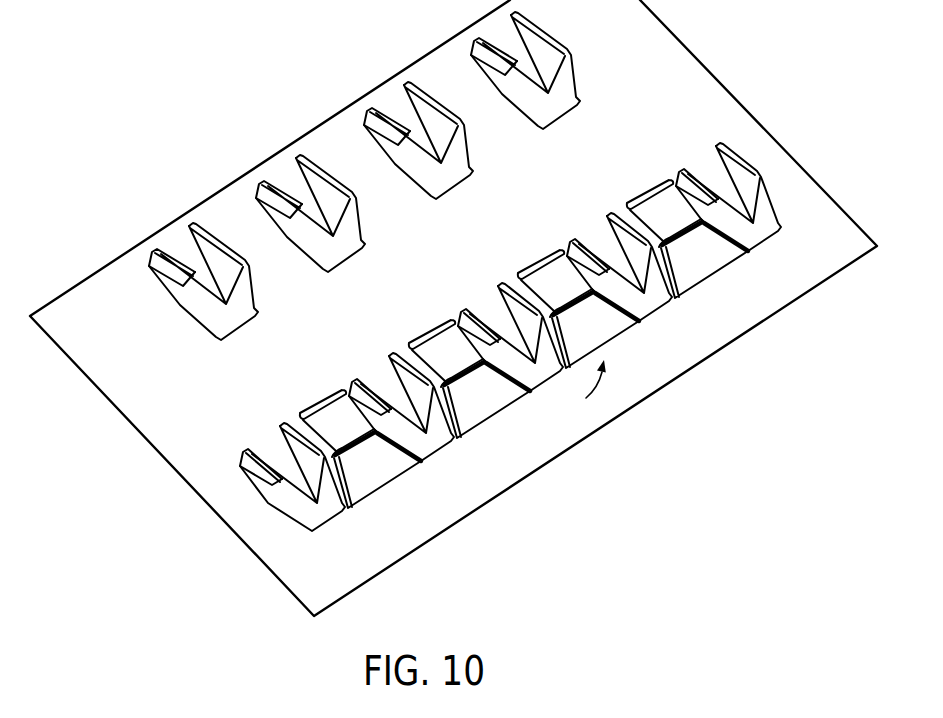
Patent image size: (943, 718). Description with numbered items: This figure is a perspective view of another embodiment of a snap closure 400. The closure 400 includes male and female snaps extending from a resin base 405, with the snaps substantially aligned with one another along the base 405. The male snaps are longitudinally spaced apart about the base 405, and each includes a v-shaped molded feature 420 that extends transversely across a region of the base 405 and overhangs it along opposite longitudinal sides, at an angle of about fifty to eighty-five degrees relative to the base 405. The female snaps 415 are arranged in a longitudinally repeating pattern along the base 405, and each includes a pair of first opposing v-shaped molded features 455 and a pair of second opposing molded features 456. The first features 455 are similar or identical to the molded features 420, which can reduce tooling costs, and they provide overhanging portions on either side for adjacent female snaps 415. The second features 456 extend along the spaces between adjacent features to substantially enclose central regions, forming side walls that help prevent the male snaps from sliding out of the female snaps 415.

The closure 400 is at (215, 58).
The resin base 405 is at (709, 88).
The female snaps 415 is at (586, 395).
The v-shaped molded feature 420 is at (549, 35).
The first opposing v-shaped molded features 455 is at (640, 307).
The second opposing molded features 456 is at (538, 257).